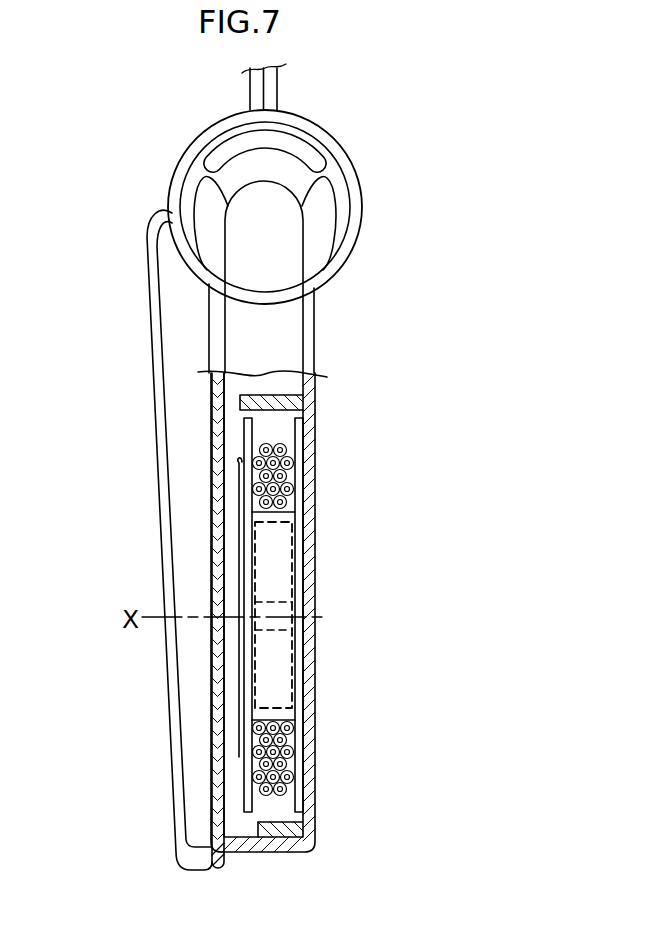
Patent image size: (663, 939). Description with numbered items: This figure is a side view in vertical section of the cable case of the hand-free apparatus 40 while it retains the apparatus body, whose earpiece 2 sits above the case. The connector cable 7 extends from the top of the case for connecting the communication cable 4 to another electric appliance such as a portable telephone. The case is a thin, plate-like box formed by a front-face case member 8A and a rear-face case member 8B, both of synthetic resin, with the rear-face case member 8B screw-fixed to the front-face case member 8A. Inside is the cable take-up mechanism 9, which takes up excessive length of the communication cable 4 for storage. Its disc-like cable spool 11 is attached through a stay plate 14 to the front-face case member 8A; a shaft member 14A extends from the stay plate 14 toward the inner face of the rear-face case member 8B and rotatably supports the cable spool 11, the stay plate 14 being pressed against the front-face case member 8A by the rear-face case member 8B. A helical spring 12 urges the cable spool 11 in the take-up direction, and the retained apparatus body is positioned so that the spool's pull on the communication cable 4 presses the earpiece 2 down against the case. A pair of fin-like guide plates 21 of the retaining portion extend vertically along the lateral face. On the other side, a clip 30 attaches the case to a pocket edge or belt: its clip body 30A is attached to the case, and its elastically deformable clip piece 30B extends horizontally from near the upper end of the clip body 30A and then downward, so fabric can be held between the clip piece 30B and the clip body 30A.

The earpiece 2 is at (332, 165).
The communication cable 4 is at (280, 447).
The connector cable 7 is at (252, 90).
The front-face case member 8A is at (313, 782).
The rear-face case member 8B is at (212, 743).
The cable take-up mechanism 9 is at (304, 666).
The cable spool 11 is at (300, 535).
The helical spring 12 is at (318, 693).
The stay plate 14 is at (225, 657).
The shaft member 14A is at (270, 597).
The fin-like guide plates 21 is at (209, 315).
The clip 30 is at (70, 412).
The clip body 30A is at (207, 430).
The clip piece 30B is at (158, 550).
The hand-free apparatus 40 is at (408, 269).